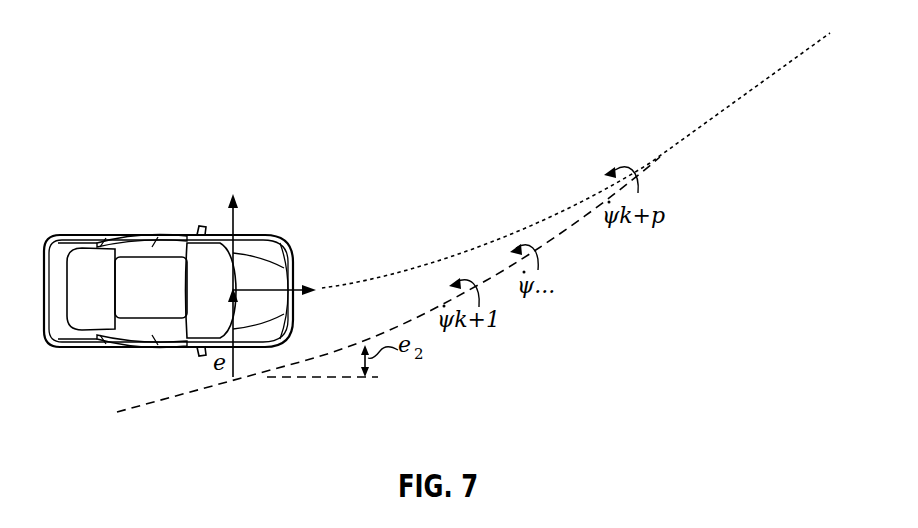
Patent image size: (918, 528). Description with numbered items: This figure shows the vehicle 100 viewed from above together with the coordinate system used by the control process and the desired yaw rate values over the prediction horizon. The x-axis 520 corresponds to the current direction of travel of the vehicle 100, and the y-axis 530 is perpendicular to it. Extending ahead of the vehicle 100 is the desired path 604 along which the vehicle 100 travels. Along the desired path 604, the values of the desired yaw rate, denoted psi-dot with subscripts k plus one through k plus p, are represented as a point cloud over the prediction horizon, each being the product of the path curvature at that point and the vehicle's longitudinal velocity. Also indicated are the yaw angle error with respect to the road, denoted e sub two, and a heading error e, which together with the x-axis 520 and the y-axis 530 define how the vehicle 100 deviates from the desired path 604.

The vehicle 100 is at (265, 237).
The y-axis 530 is at (209, 184).
The x-axis 520 is at (332, 243).
The desired path 604 is at (563, 212).